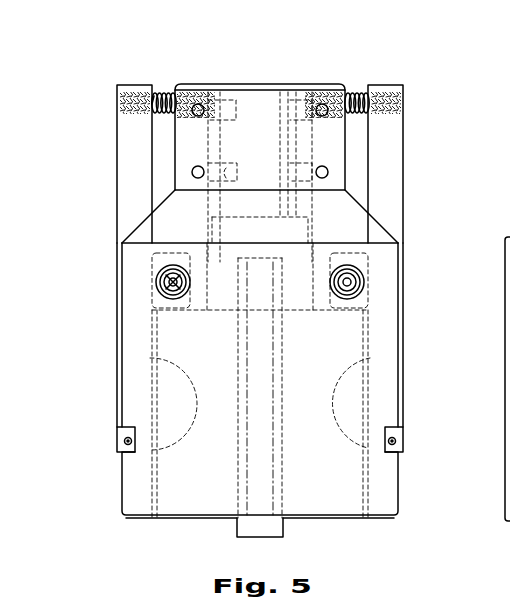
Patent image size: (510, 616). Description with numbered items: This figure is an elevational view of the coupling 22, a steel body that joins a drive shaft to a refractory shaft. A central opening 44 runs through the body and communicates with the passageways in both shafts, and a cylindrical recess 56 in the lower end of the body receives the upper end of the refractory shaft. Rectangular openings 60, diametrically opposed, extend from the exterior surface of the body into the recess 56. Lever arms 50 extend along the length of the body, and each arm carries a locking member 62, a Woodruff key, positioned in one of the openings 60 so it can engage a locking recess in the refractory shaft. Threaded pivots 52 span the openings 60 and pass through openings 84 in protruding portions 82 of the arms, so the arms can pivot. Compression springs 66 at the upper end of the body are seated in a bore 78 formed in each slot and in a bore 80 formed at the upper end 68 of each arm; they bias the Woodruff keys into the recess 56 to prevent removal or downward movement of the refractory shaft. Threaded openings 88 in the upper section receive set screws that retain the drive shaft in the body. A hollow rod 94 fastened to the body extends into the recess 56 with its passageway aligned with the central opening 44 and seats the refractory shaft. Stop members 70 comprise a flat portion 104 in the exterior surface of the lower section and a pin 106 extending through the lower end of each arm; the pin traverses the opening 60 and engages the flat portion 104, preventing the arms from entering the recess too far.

The coupling 22 is at (382, 313).
The central opening 44 is at (272, 217).
The lever arms 50 is at (133, 137).
The pivots 52 is at (156, 283).
The cylindrical recess 56 is at (158, 468).
The rectangular openings 60 is at (210, 255).
The locking member 62 is at (180, 413).
The springs 66 is at (166, 95).
The upper end of the lever arms 68 is at (122, 100).
The stop members 70 is at (68, 440).
The bore 78 is at (213, 95).
The bore 80 is at (143, 88).
The protruding portions 82 is at (152, 272).
The opening 84 is at (165, 290).
The threaded openings 88 is at (197, 178).
The hollow rod 94 is at (273, 458).
The flat portion 104 is at (120, 432).
The pin 106 is at (124, 442).